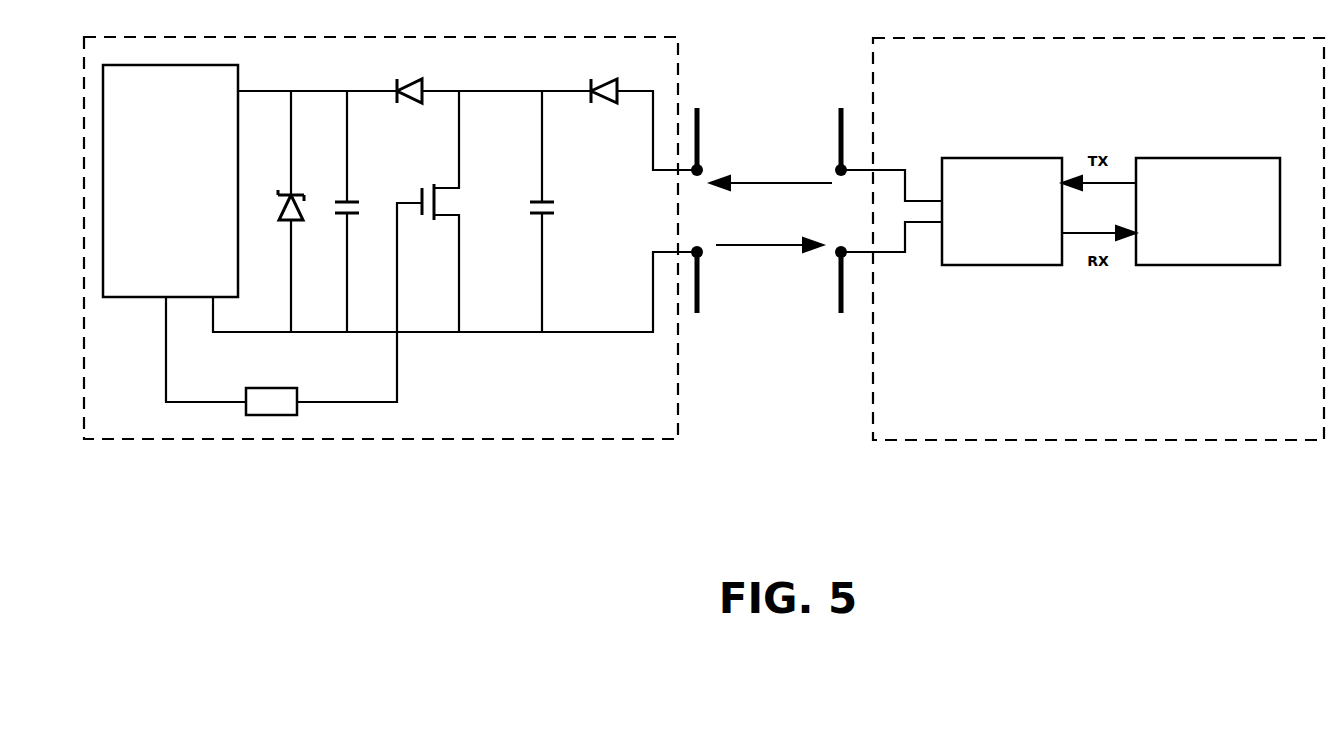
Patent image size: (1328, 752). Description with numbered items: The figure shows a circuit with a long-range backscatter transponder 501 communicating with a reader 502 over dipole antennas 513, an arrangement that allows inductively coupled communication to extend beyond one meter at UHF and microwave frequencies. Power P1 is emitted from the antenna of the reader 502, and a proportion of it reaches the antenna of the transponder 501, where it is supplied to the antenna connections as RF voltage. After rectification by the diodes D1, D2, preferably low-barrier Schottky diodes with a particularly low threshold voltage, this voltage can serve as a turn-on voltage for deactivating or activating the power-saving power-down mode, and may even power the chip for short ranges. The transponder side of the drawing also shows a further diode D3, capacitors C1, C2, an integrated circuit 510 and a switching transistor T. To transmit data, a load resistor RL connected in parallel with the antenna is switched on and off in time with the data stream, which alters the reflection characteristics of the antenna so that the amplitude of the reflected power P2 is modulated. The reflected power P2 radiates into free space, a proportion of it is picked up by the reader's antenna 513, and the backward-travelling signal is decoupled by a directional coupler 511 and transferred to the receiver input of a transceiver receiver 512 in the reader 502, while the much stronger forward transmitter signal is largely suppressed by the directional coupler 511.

The transponder 501 is at (381, 238).
The reader 502 is at (1098, 239).
The integrated circuit IC 510 is at (170, 181).
The directional coupler 511 is at (1002, 211).
The transceiver receiver 512 is at (1208, 211).
The dipole antennas 513 is at (838, 321).
The diode D1 is at (604, 80).
The diode D2 is at (410, 80).
The zener diode D3 is at (284, 218).
The capacitor C1 is at (554, 212).
The capacitor C2 is at (358, 196).
The time T is at (450, 202).
The load resistor RL is at (271, 392).
The power P1 is at (810, 146).
The power P2 is at (806, 274).